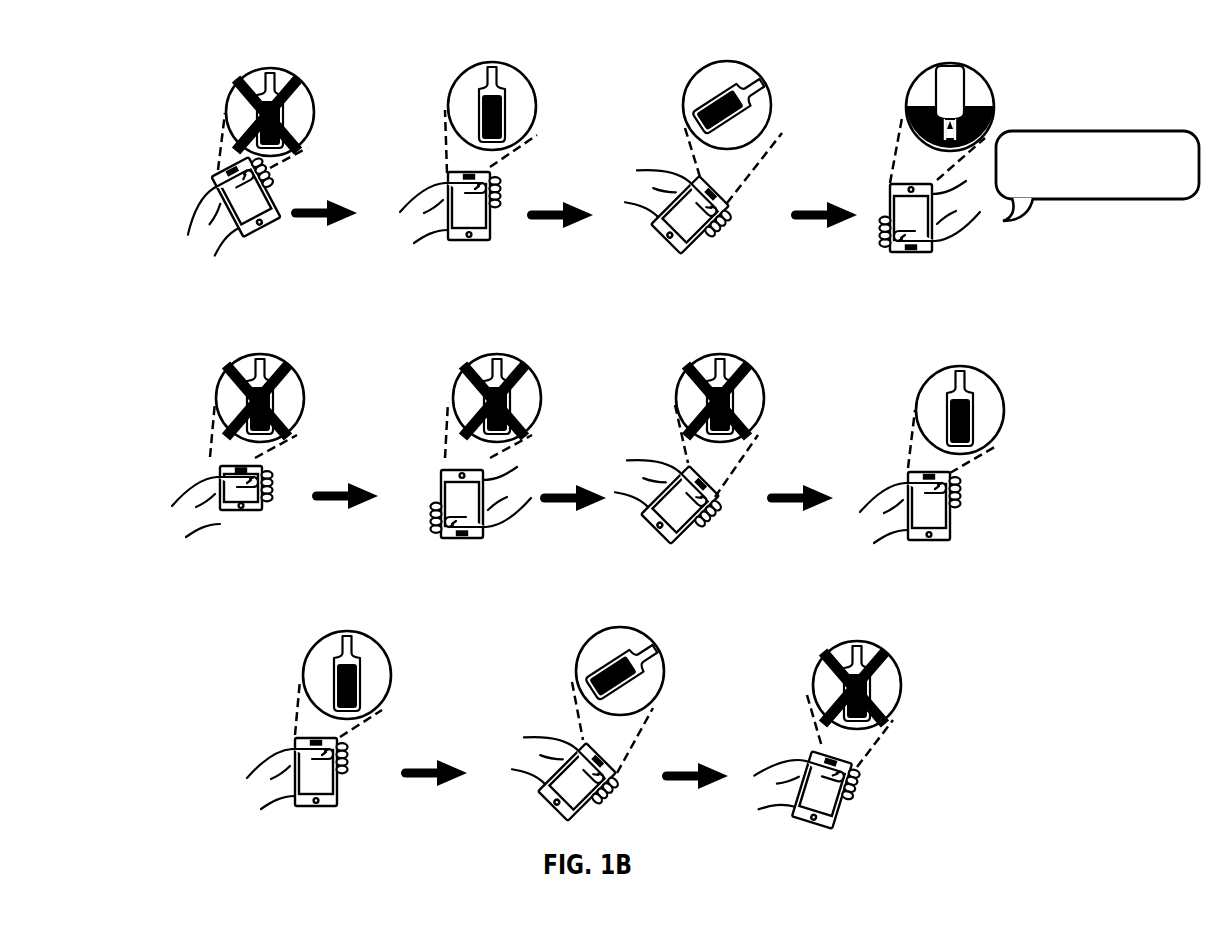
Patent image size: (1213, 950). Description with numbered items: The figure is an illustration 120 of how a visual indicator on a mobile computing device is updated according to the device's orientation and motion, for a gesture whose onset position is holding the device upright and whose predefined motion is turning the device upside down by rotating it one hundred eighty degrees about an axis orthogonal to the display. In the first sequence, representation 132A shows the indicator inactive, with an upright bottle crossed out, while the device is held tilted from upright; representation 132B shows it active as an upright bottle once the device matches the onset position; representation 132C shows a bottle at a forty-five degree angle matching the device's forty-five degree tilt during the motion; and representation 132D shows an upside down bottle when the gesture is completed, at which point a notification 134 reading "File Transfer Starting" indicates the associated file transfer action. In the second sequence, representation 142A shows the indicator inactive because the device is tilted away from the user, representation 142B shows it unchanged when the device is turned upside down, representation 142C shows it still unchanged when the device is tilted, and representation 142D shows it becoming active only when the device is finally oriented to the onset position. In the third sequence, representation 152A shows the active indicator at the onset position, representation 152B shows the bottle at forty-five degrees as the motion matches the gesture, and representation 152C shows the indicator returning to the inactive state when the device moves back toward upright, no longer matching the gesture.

The illustration 120 is at (179, 89).
The representation 132A is at (317, 88).
The representation 132B is at (545, 80).
The representation 132C is at (782, 81).
The representation 132D is at (999, 88).
The notification 134 is at (1104, 131).
The representation 142A is at (305, 380).
The representation 142B is at (549, 381).
The representation 142C is at (772, 380).
The representation 142D is at (997, 373).
The representation 152A is at (394, 657).
The representation 152B is at (669, 657).
The representation 152C is at (897, 650).